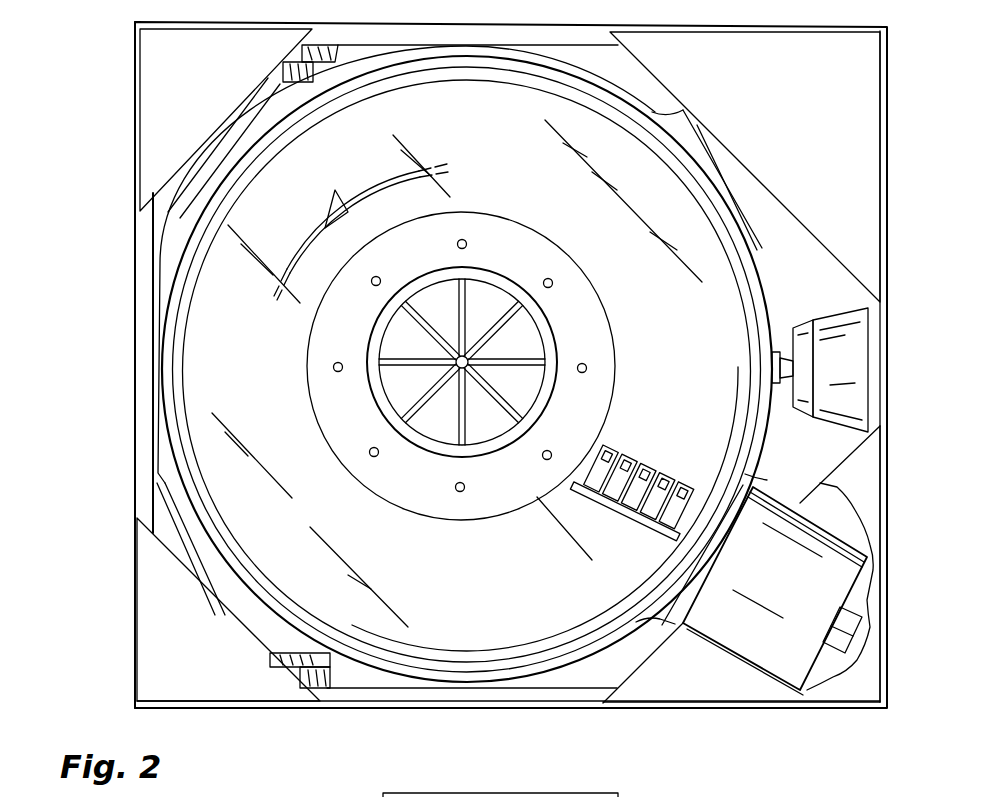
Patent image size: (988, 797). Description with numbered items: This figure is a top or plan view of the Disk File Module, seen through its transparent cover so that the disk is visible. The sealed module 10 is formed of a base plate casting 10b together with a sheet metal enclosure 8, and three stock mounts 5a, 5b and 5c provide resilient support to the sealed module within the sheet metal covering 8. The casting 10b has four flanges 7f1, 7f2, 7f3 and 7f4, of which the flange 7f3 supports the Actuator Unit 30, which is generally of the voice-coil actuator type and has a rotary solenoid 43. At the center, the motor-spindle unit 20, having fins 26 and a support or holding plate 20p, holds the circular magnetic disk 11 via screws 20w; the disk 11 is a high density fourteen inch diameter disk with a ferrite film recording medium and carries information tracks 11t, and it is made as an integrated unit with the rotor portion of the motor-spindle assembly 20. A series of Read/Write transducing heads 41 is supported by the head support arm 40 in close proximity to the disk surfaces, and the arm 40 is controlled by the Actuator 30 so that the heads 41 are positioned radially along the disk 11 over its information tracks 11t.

The sheet metal enclosure 8 is at (867, 163).
The sealed module 10 is at (118, 368).
The base plate casting 10b is at (783, 427).
The flange 7f1 is at (223, 137).
The flange 7f2 is at (212, 578).
The flange 7f3 is at (710, 572).
The flange 7f4 is at (710, 148).
The stock mount 5a is at (830, 312).
The stock mount 5b is at (335, 52).
The stock mount 5c is at (303, 677).
The magnetic disk 11 is at (460, 592).
The information tracks 11t is at (361, 232).
The motor-spindle unit 20 is at (487, 312).
The holding plate 20p is at (573, 302).
The screws 20w is at (338, 372).
The fins 26 is at (478, 420).
The Actuator Unit 30 is at (713, 660).
The head support arm 40 is at (683, 543).
The Read/Write transducing heads 41 is at (623, 447).
The rotary solenoid 43 is at (840, 630).